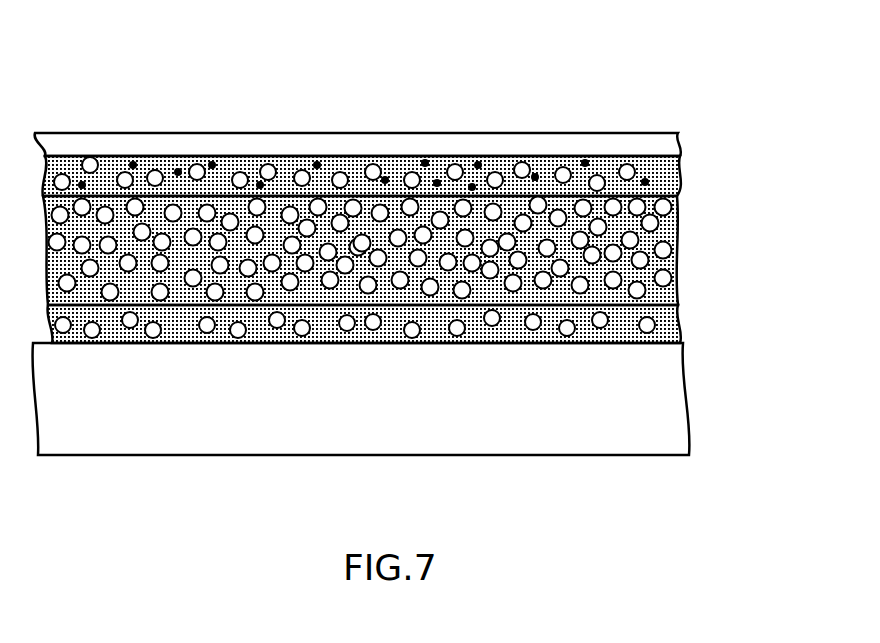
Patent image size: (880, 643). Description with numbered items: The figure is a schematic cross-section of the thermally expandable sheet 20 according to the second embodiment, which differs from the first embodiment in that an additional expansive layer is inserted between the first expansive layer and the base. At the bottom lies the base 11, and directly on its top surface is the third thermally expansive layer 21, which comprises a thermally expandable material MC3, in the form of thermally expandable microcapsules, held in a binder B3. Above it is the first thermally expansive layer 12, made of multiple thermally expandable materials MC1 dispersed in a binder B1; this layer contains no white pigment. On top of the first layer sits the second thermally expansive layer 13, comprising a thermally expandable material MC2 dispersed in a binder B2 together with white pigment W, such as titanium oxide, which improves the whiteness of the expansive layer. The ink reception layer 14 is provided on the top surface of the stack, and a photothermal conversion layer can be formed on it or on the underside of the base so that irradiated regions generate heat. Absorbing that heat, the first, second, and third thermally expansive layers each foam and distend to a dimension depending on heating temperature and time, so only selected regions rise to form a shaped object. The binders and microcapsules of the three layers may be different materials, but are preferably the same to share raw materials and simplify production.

The thermally expandable sheet 20 is at (542, 62).
The ink reception layer 14 is at (640, 142).
The second thermally expansive layer 13 is at (658, 176).
The first thermally expansive layer 12 is at (668, 225).
The third thermally expansive layer 21 is at (670, 331).
The base 11 is at (670, 423).
The white pigment W is at (134, 162).
The thermally expandable material MC1 is at (208, 206).
The binder B1 is at (275, 207).
The thermally expandable material MC2 is at (341, 174).
The binder B2 is at (396, 182).
The thermally expandable material MC3 is at (209, 332).
The binder B3 is at (262, 335).